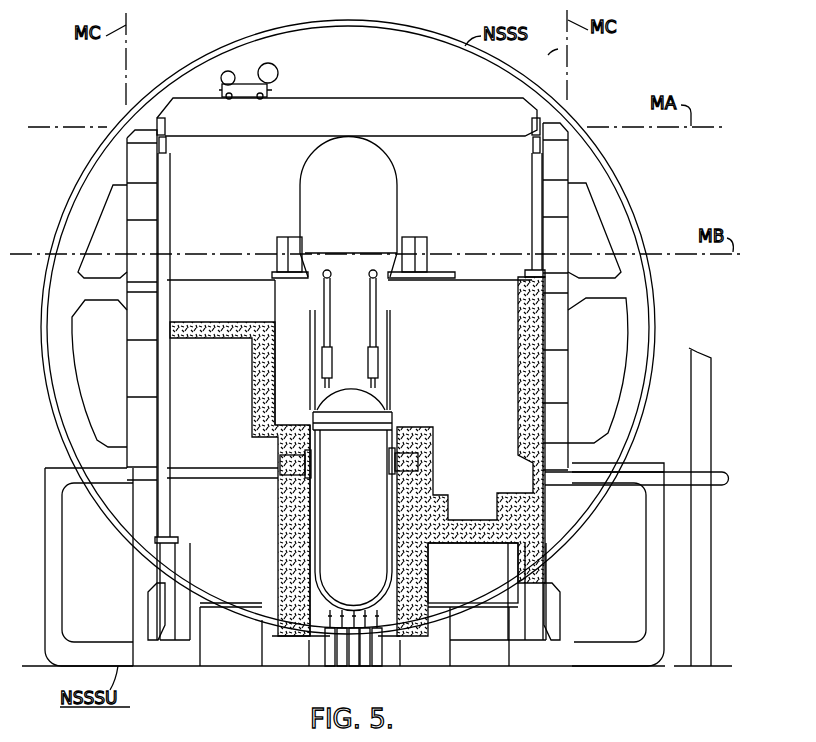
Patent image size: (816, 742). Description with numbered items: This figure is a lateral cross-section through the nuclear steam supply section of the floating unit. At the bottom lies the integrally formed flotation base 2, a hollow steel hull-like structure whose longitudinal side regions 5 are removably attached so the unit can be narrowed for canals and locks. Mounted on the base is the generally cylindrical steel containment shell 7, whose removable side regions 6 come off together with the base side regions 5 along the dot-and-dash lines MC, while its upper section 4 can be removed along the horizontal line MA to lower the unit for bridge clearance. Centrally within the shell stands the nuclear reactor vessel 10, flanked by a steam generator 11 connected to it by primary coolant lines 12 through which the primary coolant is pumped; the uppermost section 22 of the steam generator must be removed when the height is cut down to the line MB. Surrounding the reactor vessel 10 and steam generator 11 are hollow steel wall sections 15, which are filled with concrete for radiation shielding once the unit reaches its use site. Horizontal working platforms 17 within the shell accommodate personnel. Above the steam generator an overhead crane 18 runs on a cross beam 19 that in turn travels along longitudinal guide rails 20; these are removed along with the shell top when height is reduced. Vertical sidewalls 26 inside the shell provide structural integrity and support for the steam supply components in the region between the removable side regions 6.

The flotation base 2 is at (497, 666).
The upper section 4 is at (210, 52).
The longitudinal side regions 5 is at (52, 578).
The side regions of containment shell 6 is at (68, 194).
The steel containment shell 7 is at (570, 63).
The nuclear reactor vessel 10 is at (312, 553).
The steam generators 11 is at (390, 206).
The primary coolant lines 12 is at (282, 458).
The hollow steel wall sections 15 is at (260, 346).
The horizontal working platforms 17 is at (184, 469).
The overhead crane 18 is at (277, 86).
The cross beam 19 is at (410, 102).
The longitudinal guide rails 20 is at (168, 135).
The uppermost section of steam generator 22 is at (386, 174).
The vertical sidewalls 26 is at (138, 355).